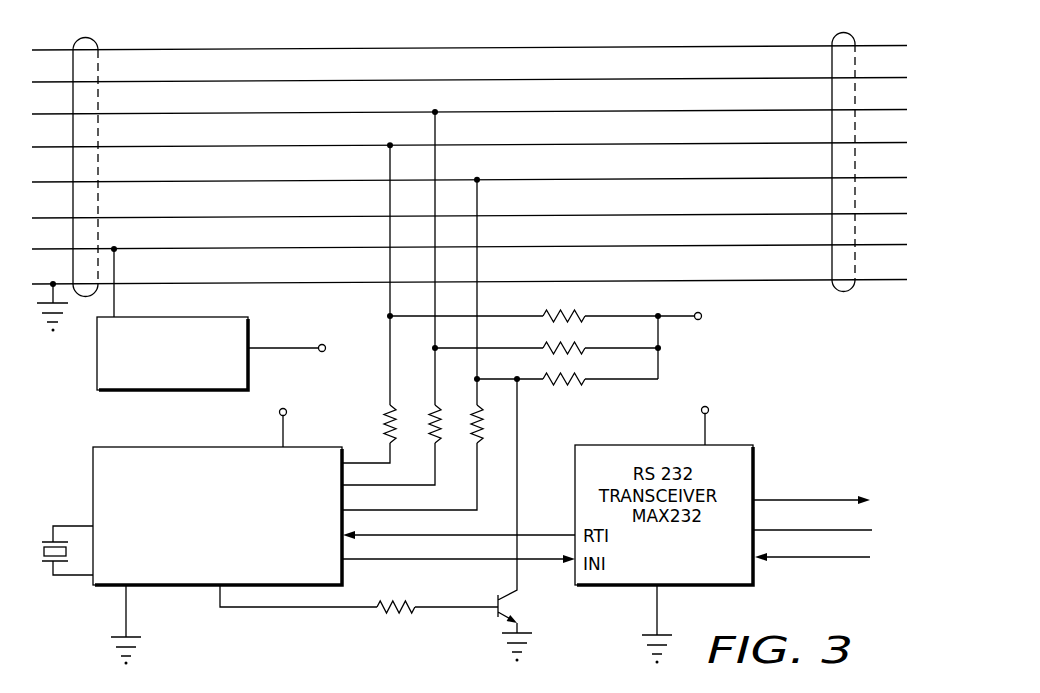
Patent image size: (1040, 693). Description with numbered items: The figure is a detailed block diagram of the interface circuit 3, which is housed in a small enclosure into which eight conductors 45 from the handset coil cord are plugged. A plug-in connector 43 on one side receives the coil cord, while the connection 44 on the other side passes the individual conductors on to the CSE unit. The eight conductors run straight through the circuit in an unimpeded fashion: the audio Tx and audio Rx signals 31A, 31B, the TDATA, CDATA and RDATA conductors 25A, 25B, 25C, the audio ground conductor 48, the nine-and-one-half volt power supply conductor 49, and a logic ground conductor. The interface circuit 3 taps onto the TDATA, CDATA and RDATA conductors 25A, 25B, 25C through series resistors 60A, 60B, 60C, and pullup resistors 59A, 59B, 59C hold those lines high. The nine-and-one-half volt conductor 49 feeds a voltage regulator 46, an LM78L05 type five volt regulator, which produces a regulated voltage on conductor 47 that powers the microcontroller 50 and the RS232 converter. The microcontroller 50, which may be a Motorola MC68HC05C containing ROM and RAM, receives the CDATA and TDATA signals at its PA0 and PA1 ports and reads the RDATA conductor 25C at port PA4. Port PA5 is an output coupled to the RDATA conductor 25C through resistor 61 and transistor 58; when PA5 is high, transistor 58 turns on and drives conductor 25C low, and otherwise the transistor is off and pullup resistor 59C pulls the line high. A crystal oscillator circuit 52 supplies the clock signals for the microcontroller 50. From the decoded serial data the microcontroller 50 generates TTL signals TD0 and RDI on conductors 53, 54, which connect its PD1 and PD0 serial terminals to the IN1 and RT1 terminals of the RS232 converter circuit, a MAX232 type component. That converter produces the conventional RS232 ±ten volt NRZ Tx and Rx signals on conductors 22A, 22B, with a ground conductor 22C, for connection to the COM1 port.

The interface circuit 3 is at (96, 621).
The Tx conductor 22A is at (801, 500).
The Rx conductor 22B is at (801, 557).
The GND line 22C is at (801, 530).
The TDATA conductor 25A is at (601, 98).
The CDATA conductor 25B is at (601, 131).
The RDATA conductor 25C is at (601, 164).
The audio Tx signal conductor 31A is at (596, 47).
The audio Rx signal conductor 31B is at (601, 66).
The plug-in connector 43 is at (93, 39).
The connection to CSE unit 44 is at (856, 34).
The conductors 45 is at (752, 290).
The voltage regulator 46 is at (251, 326).
The regulated voltage conductor 47 is at (322, 344).
The audio ground conductor 48 is at (596, 215).
The 9½ volt power supply voltage conductor 49 is at (601, 231).
The microcontroller 50 is at (138, 424).
The crystal oscillator circuit 52 is at (42, 536).
The TD0 conductor 53 is at (397, 548).
The RDI conductor 54 is at (397, 524).
The transistor 58 is at (496, 598).
The pullup resistor 59A is at (585, 315).
The pullup resistor 59B is at (585, 347).
The pullup resistor 59C is at (585, 378).
The resistor 60A is at (387, 409).
The resistor 60B is at (432, 413).
The resistor 60C is at (482, 410).
The resistor 61 is at (389, 605).